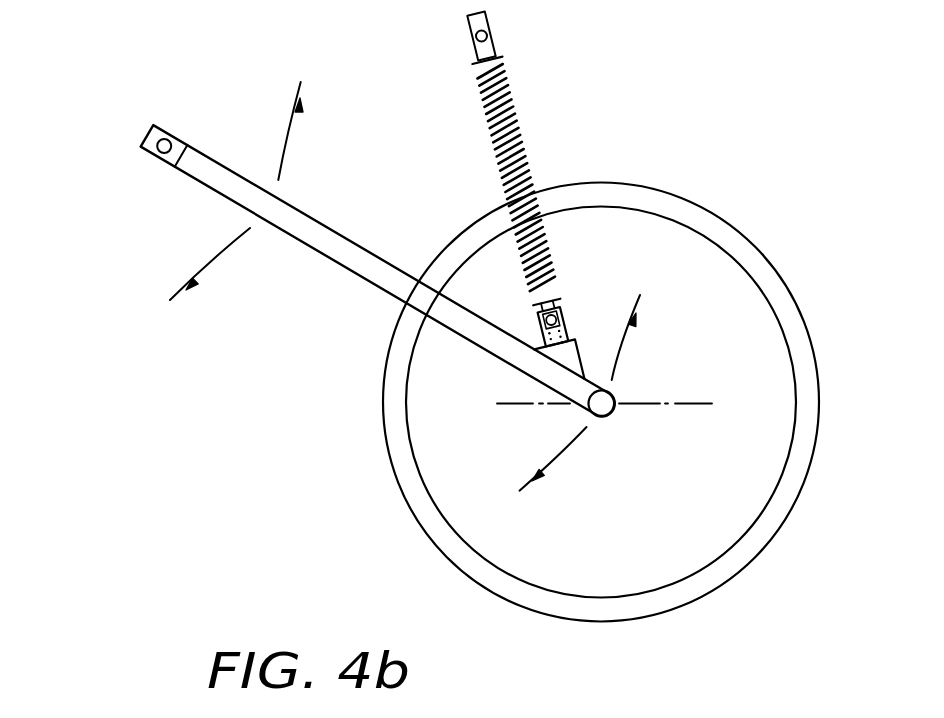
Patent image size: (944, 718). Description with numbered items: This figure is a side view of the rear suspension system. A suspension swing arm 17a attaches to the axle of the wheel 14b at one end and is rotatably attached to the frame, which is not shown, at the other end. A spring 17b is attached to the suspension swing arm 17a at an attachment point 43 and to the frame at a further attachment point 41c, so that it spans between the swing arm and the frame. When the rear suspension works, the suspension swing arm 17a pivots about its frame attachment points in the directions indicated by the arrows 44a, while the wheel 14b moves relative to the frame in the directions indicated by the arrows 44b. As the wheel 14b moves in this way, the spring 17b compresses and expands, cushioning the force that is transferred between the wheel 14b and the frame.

The wheel 14b is at (803, 315).
The suspension swing arm 17a is at (218, 192).
The spring 17b is at (520, 163).
The attachment point 41c is at (170, 130).
The attachment point 43 is at (568, 310).
The arrows 44a is at (293, 148).
The arrows 44b is at (621, 363).